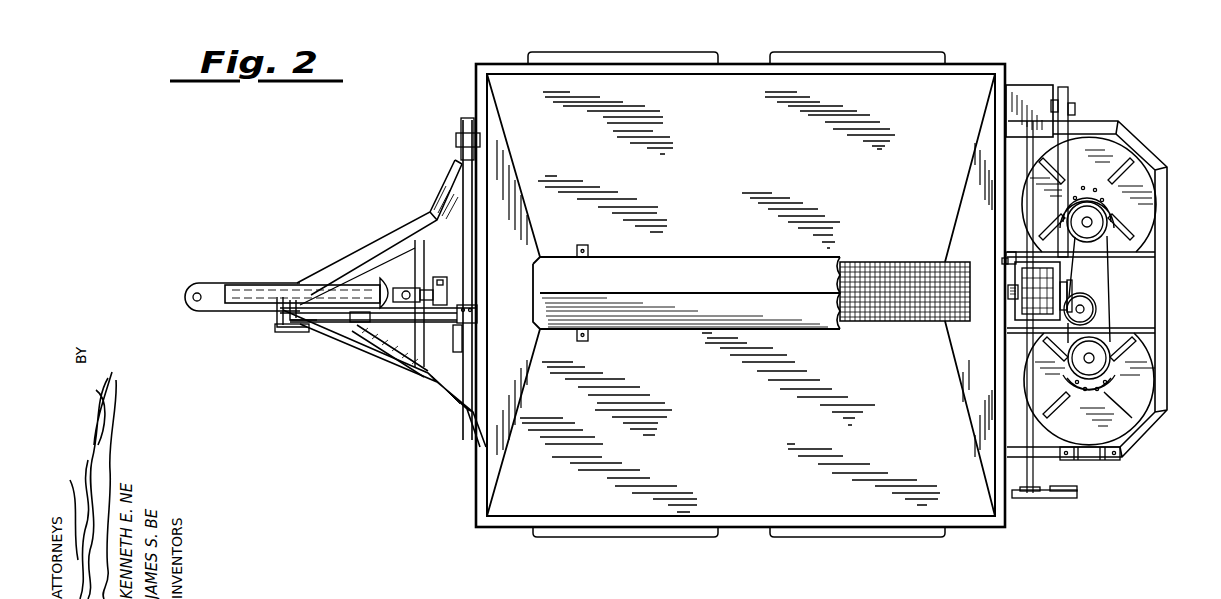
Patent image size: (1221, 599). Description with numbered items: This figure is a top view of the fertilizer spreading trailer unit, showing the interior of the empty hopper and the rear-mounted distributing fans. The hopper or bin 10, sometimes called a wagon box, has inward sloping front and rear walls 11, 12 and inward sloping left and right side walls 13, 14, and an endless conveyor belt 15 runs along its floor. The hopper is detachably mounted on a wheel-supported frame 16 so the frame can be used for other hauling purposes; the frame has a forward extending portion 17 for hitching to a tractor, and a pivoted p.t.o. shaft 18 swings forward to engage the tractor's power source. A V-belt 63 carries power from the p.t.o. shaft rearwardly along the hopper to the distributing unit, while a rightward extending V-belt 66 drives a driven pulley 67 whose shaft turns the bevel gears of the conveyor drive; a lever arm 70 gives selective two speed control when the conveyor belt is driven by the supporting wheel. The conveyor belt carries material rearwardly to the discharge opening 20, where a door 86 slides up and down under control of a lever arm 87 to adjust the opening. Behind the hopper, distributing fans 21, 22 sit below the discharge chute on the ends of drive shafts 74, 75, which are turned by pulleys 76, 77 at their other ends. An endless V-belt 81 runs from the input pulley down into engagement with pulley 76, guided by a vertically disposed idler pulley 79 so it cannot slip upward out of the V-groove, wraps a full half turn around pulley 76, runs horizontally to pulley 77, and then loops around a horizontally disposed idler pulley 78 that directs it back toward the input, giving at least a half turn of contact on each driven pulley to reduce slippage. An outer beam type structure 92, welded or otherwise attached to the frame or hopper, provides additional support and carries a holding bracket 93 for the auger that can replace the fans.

The hopper or bin 10 is at (983, 533).
The front wall 11 is at (518, 284).
The rear wall 12 is at (982, 357).
The left side wall 13 is at (738, 439).
The right side wall 14 is at (748, 180).
The endless conveyor belt 15 is at (880, 262).
The wheel-supported frame 16 is at (358, 350).
The forward extending portion 17 is at (188, 289).
The p.t.o. shaft 18 is at (240, 284).
The discharge opening 20 is at (1040, 290).
The distributing fan 21 is at (1140, 397).
The distributing fan 22 is at (1110, 160).
The V-belt 63 is at (447, 196).
The V-belt 66 is at (460, 356).
The driven pulley 67 is at (457, 396).
The lever arm 70 is at (296, 331).
The drive shaft 74 is at (1094, 355).
The drive shaft 75 is at (1092, 222).
The pulley 76 is at (1108, 371).
The pulley 77 is at (1108, 206).
The idler pulley 78 is at (1094, 300).
The idler pulley 79 is at (1075, 290).
The endless V-belt 81 is at (1074, 146).
The door 86 is at (1010, 256).
The lever arm 87 is at (1068, 500).
The outer beam type structure 92 is at (1152, 432).
The holding bracket 93 is at (1090, 462).